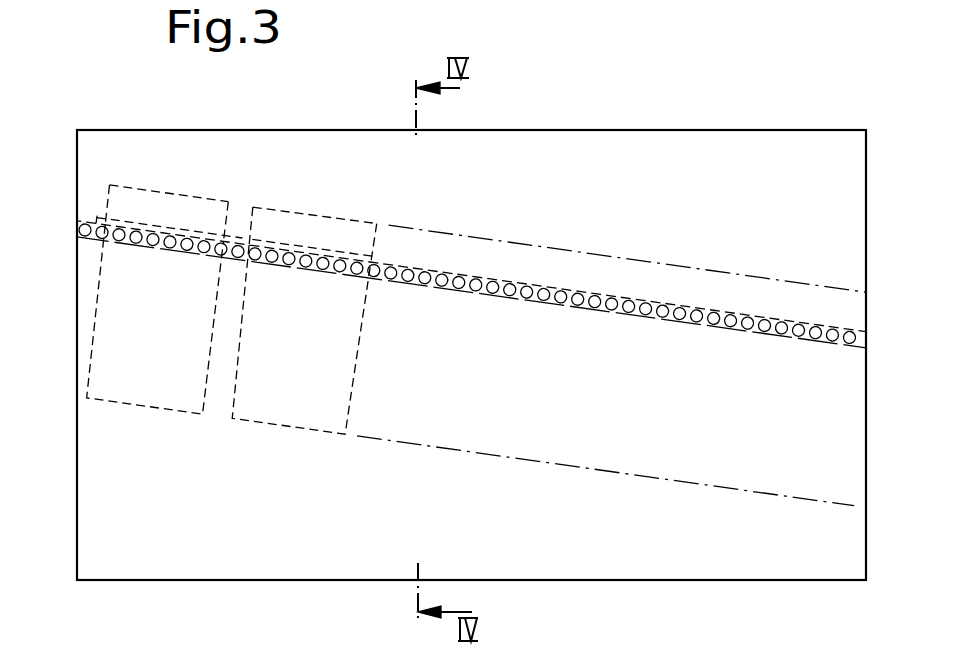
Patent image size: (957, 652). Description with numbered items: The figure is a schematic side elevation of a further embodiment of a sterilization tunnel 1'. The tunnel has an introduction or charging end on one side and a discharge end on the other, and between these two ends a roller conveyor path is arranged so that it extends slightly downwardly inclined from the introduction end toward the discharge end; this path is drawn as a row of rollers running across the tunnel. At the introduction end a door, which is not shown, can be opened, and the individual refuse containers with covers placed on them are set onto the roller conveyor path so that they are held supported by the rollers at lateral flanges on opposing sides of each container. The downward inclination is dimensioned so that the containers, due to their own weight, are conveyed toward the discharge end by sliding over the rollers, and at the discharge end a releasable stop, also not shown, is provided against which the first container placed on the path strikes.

The sterilization tunnel 1' is at (471, 315).